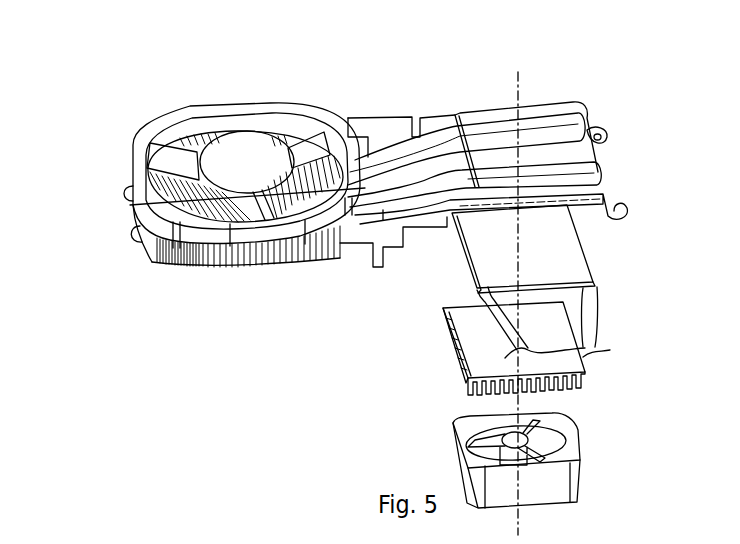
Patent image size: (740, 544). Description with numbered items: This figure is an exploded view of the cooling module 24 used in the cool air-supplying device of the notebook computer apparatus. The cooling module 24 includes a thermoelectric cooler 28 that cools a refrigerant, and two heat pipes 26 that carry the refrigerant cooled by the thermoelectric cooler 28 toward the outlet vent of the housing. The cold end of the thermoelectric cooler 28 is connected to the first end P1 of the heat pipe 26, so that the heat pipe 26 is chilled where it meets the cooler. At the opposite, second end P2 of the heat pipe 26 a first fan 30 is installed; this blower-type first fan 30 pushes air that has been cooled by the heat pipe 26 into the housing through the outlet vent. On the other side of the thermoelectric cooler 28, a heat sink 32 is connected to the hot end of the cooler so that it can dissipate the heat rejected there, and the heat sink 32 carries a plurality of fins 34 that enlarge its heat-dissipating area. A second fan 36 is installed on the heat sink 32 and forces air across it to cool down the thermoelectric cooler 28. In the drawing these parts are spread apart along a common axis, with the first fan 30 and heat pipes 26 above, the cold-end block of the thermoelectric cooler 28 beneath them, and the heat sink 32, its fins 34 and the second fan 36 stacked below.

The cooling module 24 is at (697, 128).
The heat pipe 26 is at (597, 125).
The thermoelectric cooler 28 is at (587, 258).
The first fan 30 is at (302, 104).
The heat sink 32 is at (583, 357).
The fins 34 is at (588, 377).
The second fan 36 is at (583, 487).
The first end of the heat pipe P1 is at (577, 154).
The second end of the heat pipe P2 is at (119, 222).